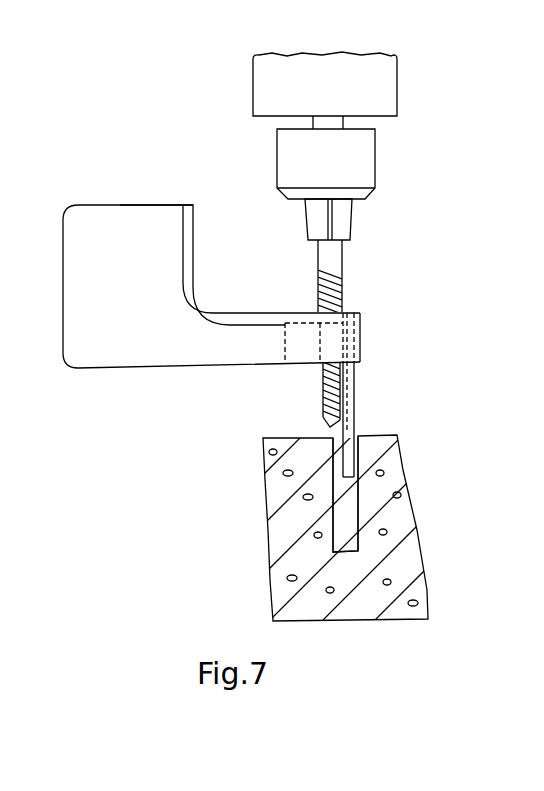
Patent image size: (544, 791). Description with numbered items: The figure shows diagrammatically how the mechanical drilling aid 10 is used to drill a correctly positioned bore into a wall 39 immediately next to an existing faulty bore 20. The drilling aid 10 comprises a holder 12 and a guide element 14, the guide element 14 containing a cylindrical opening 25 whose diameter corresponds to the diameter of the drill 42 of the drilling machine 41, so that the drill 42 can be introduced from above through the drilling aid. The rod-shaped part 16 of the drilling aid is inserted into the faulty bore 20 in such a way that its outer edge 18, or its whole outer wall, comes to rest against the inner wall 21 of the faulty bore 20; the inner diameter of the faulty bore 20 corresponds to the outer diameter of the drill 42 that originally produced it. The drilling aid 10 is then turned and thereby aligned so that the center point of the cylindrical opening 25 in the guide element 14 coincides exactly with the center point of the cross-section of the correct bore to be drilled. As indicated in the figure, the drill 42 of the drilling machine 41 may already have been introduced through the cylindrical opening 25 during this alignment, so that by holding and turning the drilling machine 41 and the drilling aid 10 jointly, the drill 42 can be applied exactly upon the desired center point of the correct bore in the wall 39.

The mechanical drilling aid 10 is at (180, 354).
The holder 12 is at (145, 205).
The guide element 14 is at (358, 349).
The rod-shaped part 16 is at (350, 438).
The outer edge 18 is at (355, 395).
The faulty bore 20 is at (345, 546).
The inner wall 21 is at (354, 509).
The cylindrical opening 25 is at (342, 327).
The wall 39 is at (394, 450).
The drilling machine 41 is at (386, 94).
The drill 42 is at (343, 290).